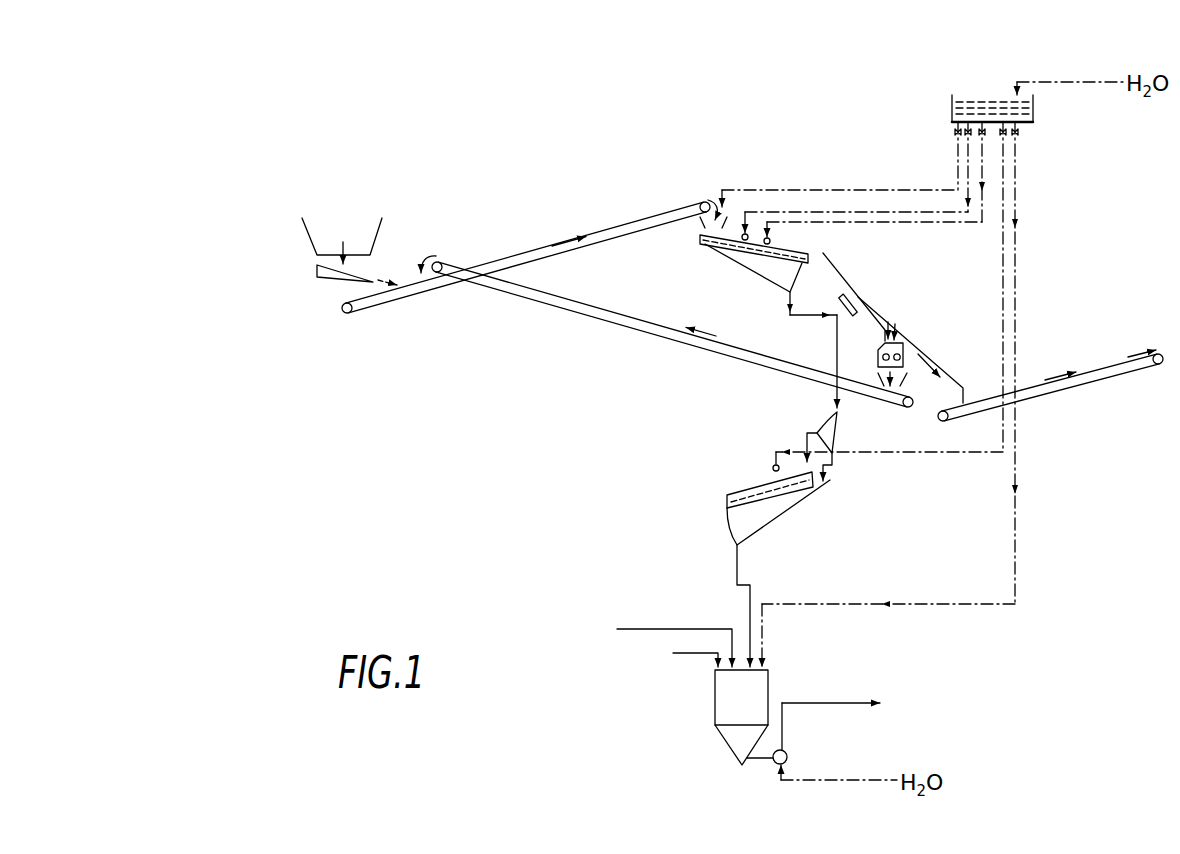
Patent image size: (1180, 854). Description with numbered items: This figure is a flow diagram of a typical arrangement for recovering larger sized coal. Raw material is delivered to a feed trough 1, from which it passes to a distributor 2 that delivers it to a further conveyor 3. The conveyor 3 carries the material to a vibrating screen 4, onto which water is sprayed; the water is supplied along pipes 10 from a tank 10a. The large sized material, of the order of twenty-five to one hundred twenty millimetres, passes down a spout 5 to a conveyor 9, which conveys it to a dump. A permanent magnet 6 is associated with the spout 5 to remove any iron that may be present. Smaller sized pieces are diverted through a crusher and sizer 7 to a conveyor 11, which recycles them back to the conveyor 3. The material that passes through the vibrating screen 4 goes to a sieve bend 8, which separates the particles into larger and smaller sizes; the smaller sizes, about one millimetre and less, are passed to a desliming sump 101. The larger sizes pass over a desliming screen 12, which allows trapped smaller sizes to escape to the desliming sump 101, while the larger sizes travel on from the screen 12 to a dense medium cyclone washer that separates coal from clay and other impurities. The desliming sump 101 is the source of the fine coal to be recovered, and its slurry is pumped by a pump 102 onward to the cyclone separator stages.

The feed trough 1 is at (308, 231).
The distributor 2 is at (318, 270).
The further conveyor 3 is at (616, 227).
The vibrating screen 4 is at (752, 255).
The spout 5 is at (888, 312).
The permanent magnet 6 is at (840, 303).
The crusher and sizer 7 is at (878, 356).
The sieve bend 8 is at (834, 434).
The conveyor 9 is at (1103, 367).
The pipes 10 is at (883, 223).
The tank 10a is at (960, 107).
The conveyor 11 is at (602, 308).
The desliming screen 12 is at (747, 510).
The desliming sump 101 is at (730, 698).
The pump 102 is at (787, 757).